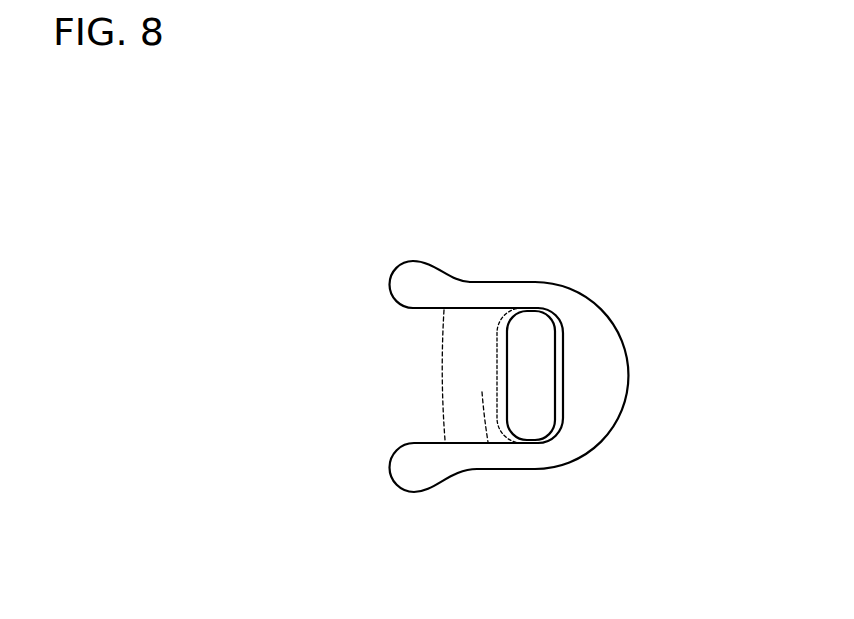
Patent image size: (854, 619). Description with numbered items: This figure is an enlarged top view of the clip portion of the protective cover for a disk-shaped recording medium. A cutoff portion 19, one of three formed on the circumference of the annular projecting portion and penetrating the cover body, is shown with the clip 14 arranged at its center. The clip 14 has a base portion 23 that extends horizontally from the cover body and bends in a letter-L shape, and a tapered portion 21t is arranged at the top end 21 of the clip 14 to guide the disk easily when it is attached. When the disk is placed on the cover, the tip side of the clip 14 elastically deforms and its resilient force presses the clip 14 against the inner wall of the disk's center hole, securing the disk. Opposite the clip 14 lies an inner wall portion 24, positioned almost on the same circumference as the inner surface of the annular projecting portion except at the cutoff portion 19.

The cutoff portion 19 is at (613, 322).
The top end 21 is at (526, 342).
The tapered portion 21t is at (497, 350).
The inner wall portion 24 is at (562, 347).
The base portion 23 is at (465, 398).
The clip 14 is at (485, 393).